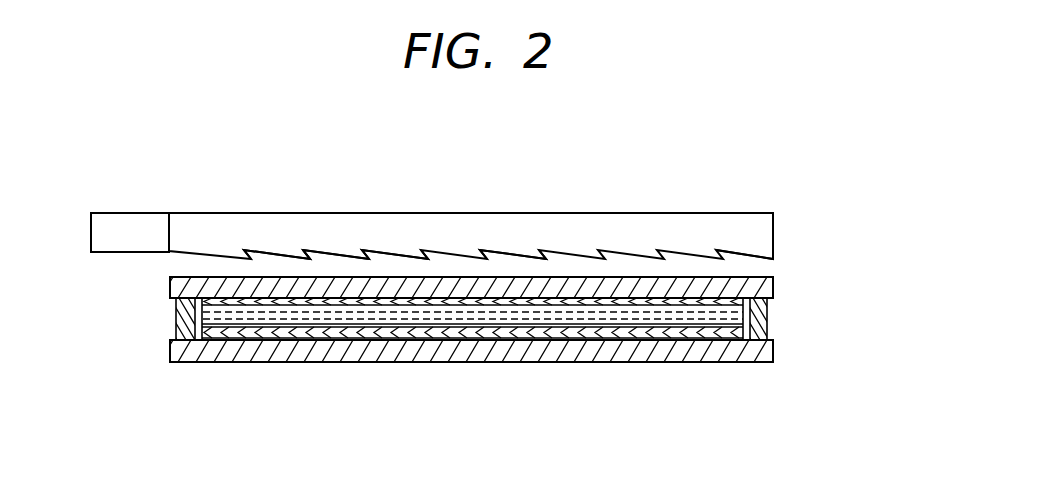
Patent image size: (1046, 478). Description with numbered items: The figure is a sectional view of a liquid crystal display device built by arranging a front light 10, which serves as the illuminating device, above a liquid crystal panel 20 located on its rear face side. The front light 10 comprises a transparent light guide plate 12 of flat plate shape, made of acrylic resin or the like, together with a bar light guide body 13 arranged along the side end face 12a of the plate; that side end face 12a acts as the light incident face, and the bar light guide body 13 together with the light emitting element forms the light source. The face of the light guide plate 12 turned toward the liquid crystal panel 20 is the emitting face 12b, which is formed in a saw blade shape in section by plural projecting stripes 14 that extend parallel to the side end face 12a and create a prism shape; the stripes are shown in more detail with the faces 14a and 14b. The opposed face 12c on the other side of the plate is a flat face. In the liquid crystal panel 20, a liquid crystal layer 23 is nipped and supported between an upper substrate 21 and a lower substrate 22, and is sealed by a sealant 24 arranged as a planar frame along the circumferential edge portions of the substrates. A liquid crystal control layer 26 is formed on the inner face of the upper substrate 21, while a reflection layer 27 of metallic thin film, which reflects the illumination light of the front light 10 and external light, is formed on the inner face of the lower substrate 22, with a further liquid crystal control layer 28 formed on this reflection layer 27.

The front light 10 is at (475, 242).
The light guide plate 12 is at (491, 242).
The side end face 12a is at (168, 237).
The emitting face 12b is at (750, 256).
The opposed face 12c is at (667, 212).
The bar light guide body 13 is at (118, 254).
The projecting stripes 14 is at (395, 187).
The inclined surface of prism 14a is at (378, 251).
The steep surface of prism 14b is at (340, 251).
The liquid crystal panel 20 is at (503, 360).
The upper substrate 21 is at (773, 292).
The lower substrate 22 is at (773, 352).
The liquid crystal layer 23 is at (768, 323).
The sealant 24 is at (184, 340).
The liquid crystal control layer 26 is at (509, 300).
The reflection layer 27 is at (600, 336).
The liquid crystal control layer 28 is at (677, 326).